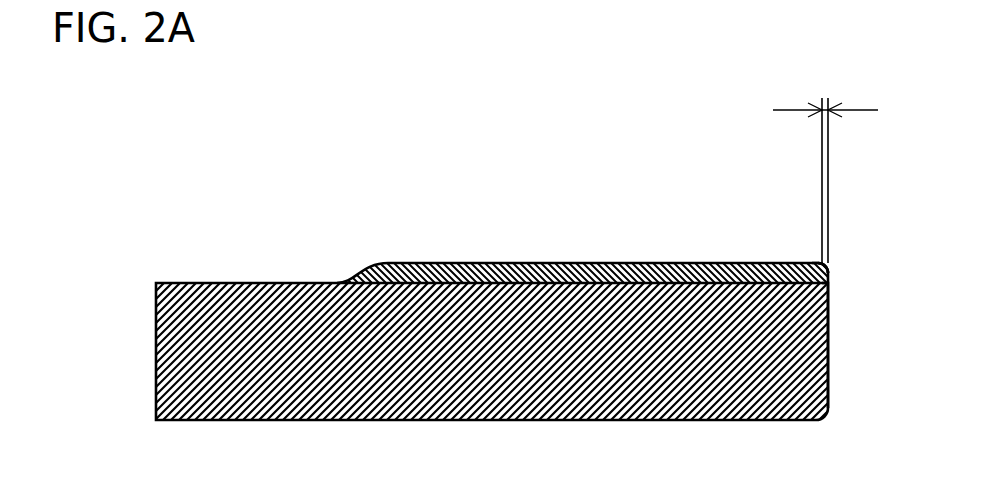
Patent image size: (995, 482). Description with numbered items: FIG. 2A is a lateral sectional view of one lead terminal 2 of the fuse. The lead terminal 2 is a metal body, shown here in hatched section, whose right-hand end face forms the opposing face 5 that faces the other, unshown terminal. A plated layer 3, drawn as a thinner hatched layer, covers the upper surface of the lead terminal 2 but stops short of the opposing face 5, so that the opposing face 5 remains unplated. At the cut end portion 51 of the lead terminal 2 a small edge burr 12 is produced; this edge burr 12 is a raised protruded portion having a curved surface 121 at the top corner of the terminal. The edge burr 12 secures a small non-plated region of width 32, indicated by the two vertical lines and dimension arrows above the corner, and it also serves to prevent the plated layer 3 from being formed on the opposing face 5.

The lead terminal 2 is at (617, 393).
The plated layer 3 is at (527, 263).
The opposing face 5 is at (830, 363).
The end portion 51 is at (829, 281).
The edge burr 12 is at (829, 263).
The curved surface 121 is at (808, 265).
The width 32 is at (827, 110).